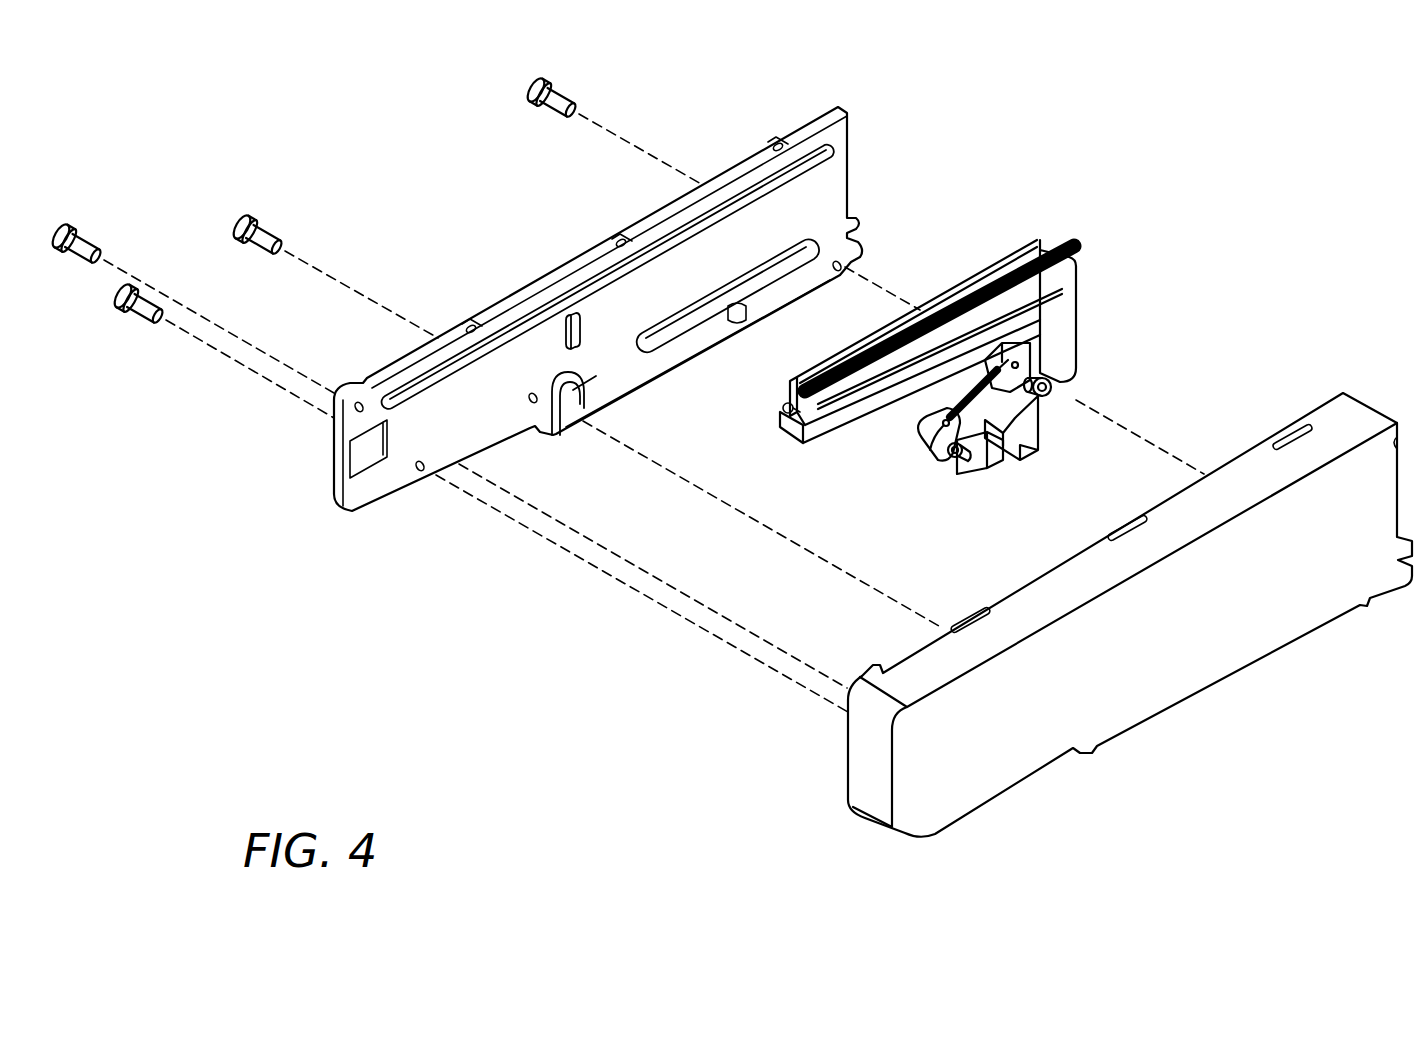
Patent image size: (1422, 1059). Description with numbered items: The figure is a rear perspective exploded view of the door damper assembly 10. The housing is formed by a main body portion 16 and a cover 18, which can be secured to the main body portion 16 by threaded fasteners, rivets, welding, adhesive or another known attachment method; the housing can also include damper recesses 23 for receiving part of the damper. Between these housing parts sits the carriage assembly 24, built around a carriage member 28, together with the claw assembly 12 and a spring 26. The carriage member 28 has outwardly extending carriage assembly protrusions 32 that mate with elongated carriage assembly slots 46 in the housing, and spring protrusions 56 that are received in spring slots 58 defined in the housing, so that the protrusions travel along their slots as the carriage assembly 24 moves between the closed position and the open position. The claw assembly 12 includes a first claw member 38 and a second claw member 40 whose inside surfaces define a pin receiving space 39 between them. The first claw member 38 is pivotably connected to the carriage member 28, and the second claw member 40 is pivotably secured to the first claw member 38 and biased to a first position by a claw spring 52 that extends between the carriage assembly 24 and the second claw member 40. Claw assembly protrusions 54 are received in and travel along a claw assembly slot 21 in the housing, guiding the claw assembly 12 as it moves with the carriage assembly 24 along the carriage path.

The door damper assembly 10 is at (1140, 140).
The claw assembly 12 is at (1021, 448).
The main body portion 16 is at (1152, 673).
The cover 18 is at (627, 309).
The claw assembly slot 21 is at (583, 394).
The damper recess 23 is at (437, 418).
The carriage assembly 24 is at (957, 309).
The spring 26 is at (1068, 238).
The carriage member 28 is at (1058, 318).
The carriage assembly protrusion 32 is at (1051, 388).
The first claw member 38 is at (1030, 417).
The pin receiving space 39 is at (998, 462).
The second claw member 40 is at (957, 468).
The carriage assembly slot 46 is at (814, 242).
The claw spring 52 is at (957, 402).
The claw assembly protrusion 54 is at (950, 462).
The spring protrusion 56 is at (778, 417).
The spring slot 58 is at (822, 154).